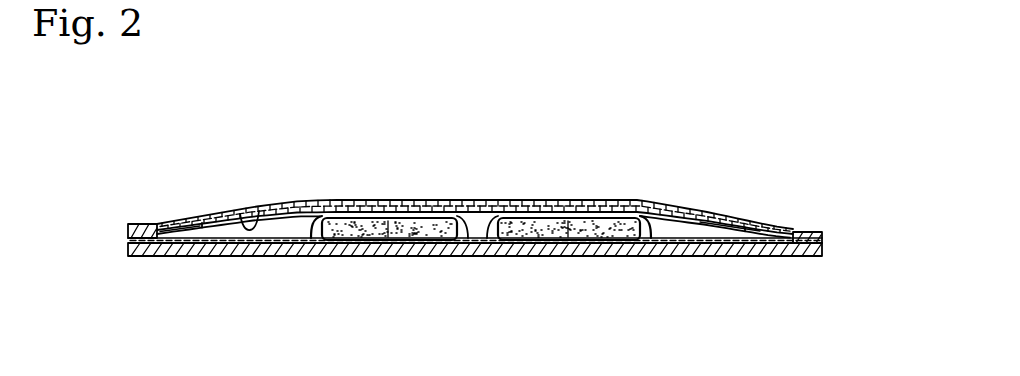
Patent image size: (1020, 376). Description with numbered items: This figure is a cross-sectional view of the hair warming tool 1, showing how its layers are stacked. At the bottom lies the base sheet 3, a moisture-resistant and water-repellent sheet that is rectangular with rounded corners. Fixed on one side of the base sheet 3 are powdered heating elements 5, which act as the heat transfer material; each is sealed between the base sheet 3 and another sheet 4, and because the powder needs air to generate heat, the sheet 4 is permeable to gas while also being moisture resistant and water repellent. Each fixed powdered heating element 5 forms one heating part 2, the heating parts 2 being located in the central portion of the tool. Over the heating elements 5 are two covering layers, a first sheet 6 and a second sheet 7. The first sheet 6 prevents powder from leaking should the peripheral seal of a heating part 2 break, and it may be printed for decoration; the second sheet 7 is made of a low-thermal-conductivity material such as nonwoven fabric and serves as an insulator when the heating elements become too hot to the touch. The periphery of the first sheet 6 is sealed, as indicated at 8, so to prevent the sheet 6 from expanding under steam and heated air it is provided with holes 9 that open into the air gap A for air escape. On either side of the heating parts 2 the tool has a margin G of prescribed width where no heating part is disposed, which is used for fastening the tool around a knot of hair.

The hair warming tool 1 is at (840, 147).
The heating part 2 is at (452, 280).
The base sheet 3 is at (473, 257).
The sheet 4 is at (360, 200).
The powdered heating element 5 is at (384, 218).
The first sheet 6 is at (238, 217).
The second sheet 7 is at (683, 213).
The peripheral seal 8 is at (141, 226).
The holes 9 is at (178, 228).
The air gap A is at (287, 228).
The margin G is at (318, 280).